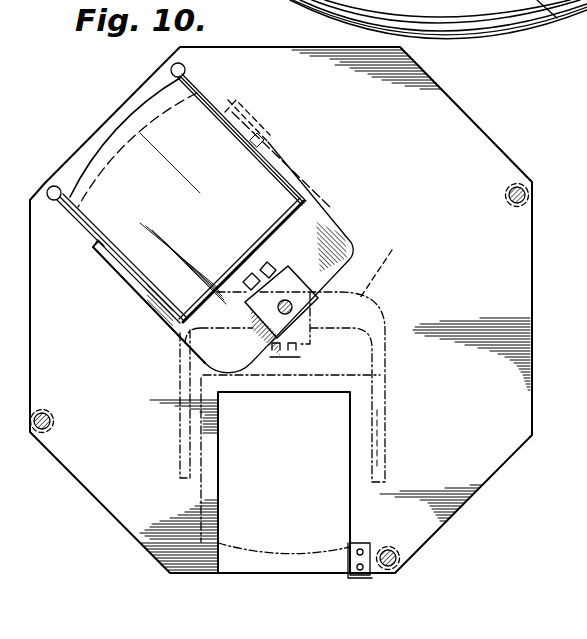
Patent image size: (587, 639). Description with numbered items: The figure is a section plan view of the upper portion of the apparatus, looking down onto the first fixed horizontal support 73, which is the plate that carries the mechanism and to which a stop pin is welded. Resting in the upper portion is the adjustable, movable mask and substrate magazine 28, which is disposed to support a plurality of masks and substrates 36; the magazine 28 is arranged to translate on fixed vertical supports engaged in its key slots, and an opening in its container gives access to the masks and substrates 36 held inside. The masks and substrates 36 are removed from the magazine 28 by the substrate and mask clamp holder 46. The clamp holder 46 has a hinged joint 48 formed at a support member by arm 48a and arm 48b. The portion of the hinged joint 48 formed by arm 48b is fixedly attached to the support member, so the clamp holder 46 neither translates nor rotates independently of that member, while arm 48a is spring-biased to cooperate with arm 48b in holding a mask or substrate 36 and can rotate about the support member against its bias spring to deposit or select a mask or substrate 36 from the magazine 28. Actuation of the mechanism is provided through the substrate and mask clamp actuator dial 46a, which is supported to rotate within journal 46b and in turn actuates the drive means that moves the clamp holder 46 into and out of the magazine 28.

The mask and substrate magazine 28 is at (98, 124).
The masks and substrates 36 is at (190, 212).
The substrate and mask clamp holder 46 is at (350, 256).
The substrate and mask clamp actuator dial 46a is at (385, 412).
The journal 46b is at (187, 423).
The hinged joint 48 is at (286, 270).
The arm 48a is at (158, 312).
The arm 48b is at (270, 140).
The first fixed horizontal support 73 is at (488, 314).